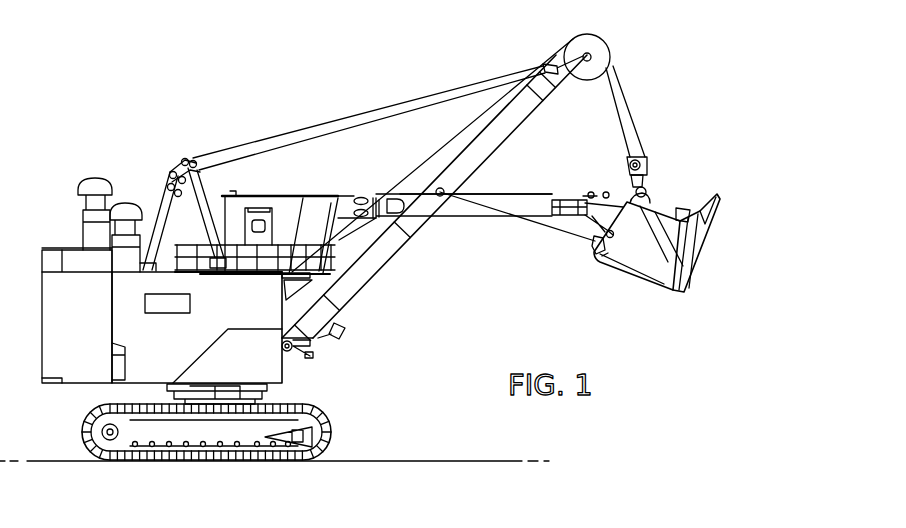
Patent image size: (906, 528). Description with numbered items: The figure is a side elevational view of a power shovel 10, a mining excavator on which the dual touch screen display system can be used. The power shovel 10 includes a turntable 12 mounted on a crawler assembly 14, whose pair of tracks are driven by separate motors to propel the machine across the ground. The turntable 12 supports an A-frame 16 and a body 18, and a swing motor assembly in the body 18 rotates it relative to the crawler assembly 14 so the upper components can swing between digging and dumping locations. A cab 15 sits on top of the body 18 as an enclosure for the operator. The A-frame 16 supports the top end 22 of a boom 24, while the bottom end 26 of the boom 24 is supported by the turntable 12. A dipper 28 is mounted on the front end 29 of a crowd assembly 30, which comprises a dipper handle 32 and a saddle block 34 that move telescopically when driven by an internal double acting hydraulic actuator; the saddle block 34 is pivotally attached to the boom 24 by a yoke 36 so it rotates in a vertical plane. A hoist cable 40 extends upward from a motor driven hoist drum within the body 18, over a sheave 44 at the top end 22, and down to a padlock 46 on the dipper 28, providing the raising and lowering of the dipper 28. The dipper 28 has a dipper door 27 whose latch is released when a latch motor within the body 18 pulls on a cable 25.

The power shovel 10 is at (176, 131).
The turntable 12 is at (272, 382).
The crawler assembly 14 is at (307, 417).
The cab 15 is at (297, 203).
The A-frame 16 is at (160, 196).
The body 18 is at (176, 356).
The top end of boom 22 is at (584, 80).
The boom 24 is at (381, 268).
The cable 25 is at (563, 242).
The bottom end of boom 26 is at (293, 343).
The dipper door 27 is at (644, 280).
The dipper 28 is at (686, 256).
The front end of crowd assembly 29 is at (580, 192).
The crowd assembly 30 is at (463, 222).
The dipper handle 32 is at (488, 193).
The saddle block 34 is at (361, 186).
The yoke 36 is at (397, 198).
The hoist cable 40 is at (462, 128).
The sheave 44 is at (602, 38).
The padlock 46 is at (647, 175).